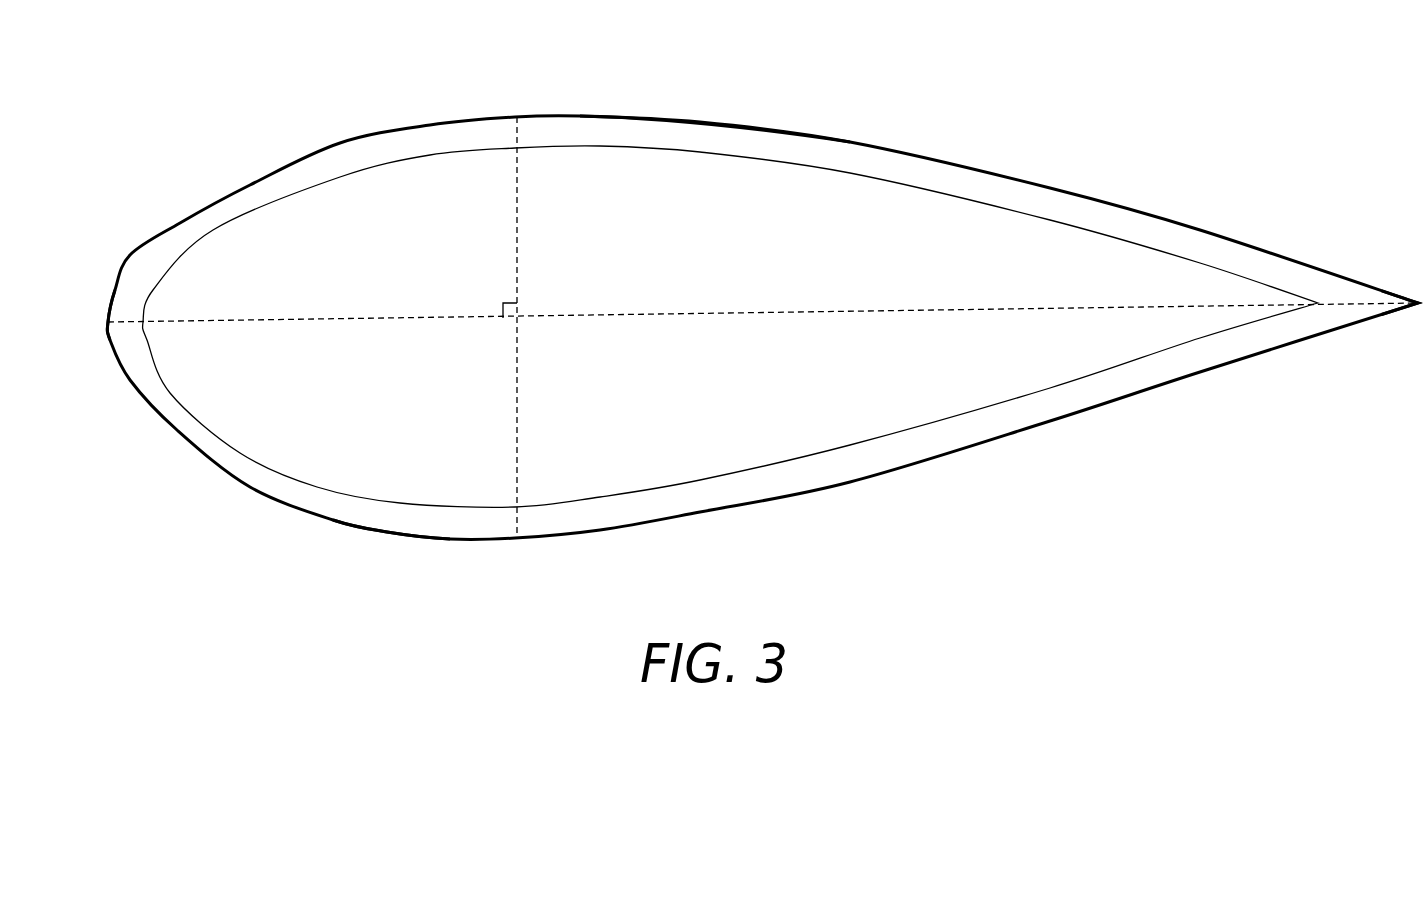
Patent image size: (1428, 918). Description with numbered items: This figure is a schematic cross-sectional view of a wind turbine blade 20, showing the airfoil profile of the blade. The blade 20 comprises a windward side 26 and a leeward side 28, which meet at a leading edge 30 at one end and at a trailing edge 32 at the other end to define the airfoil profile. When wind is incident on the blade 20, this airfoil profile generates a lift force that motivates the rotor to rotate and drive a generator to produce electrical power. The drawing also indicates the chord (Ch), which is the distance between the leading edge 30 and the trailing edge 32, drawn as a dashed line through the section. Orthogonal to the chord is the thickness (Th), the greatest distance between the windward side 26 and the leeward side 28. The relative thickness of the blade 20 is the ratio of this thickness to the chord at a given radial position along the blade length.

The blade 20 is at (320, 78).
The windward side 26 is at (392, 533).
The leeward side 28 is at (664, 116).
The leading edge 30 is at (110, 322).
The trailing edge 32 is at (1418, 302).